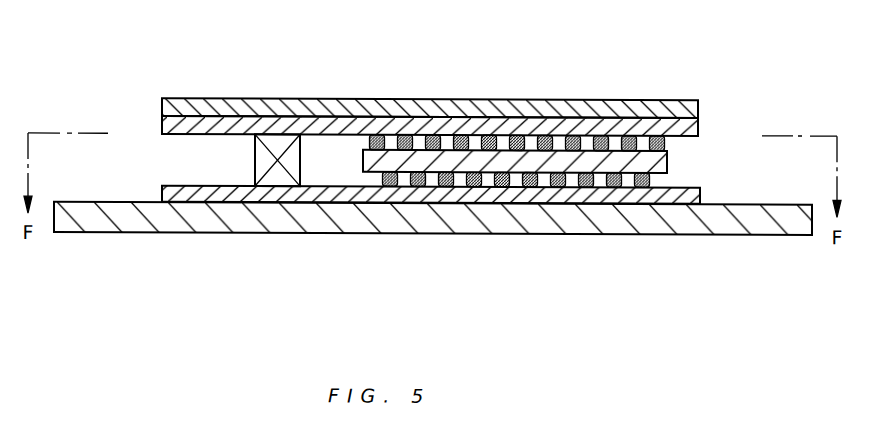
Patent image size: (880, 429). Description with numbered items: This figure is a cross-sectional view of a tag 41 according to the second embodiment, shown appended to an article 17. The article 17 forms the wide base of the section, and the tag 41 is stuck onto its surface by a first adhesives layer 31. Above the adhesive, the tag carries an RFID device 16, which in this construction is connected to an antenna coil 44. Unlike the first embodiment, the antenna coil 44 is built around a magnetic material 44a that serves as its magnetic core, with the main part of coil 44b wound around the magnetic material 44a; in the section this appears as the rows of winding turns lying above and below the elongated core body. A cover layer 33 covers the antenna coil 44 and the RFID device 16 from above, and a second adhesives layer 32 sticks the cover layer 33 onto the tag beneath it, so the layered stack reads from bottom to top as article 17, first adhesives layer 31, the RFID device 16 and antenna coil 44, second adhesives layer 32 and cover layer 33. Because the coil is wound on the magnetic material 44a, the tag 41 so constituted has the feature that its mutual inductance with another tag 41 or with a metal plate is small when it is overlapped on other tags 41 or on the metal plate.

The RFID device 16 is at (255, 157).
The article 17 is at (568, 232).
The first adhesives layer 31 is at (700, 193).
The second adhesives layer 32 is at (698, 126).
The cover layer 33 is at (637, 97).
The tag 41 is at (479, 98).
The antenna coil 44 is at (485, 101).
The magnetic material 44a is at (363, 157).
The main part of coil 44b is at (507, 124).